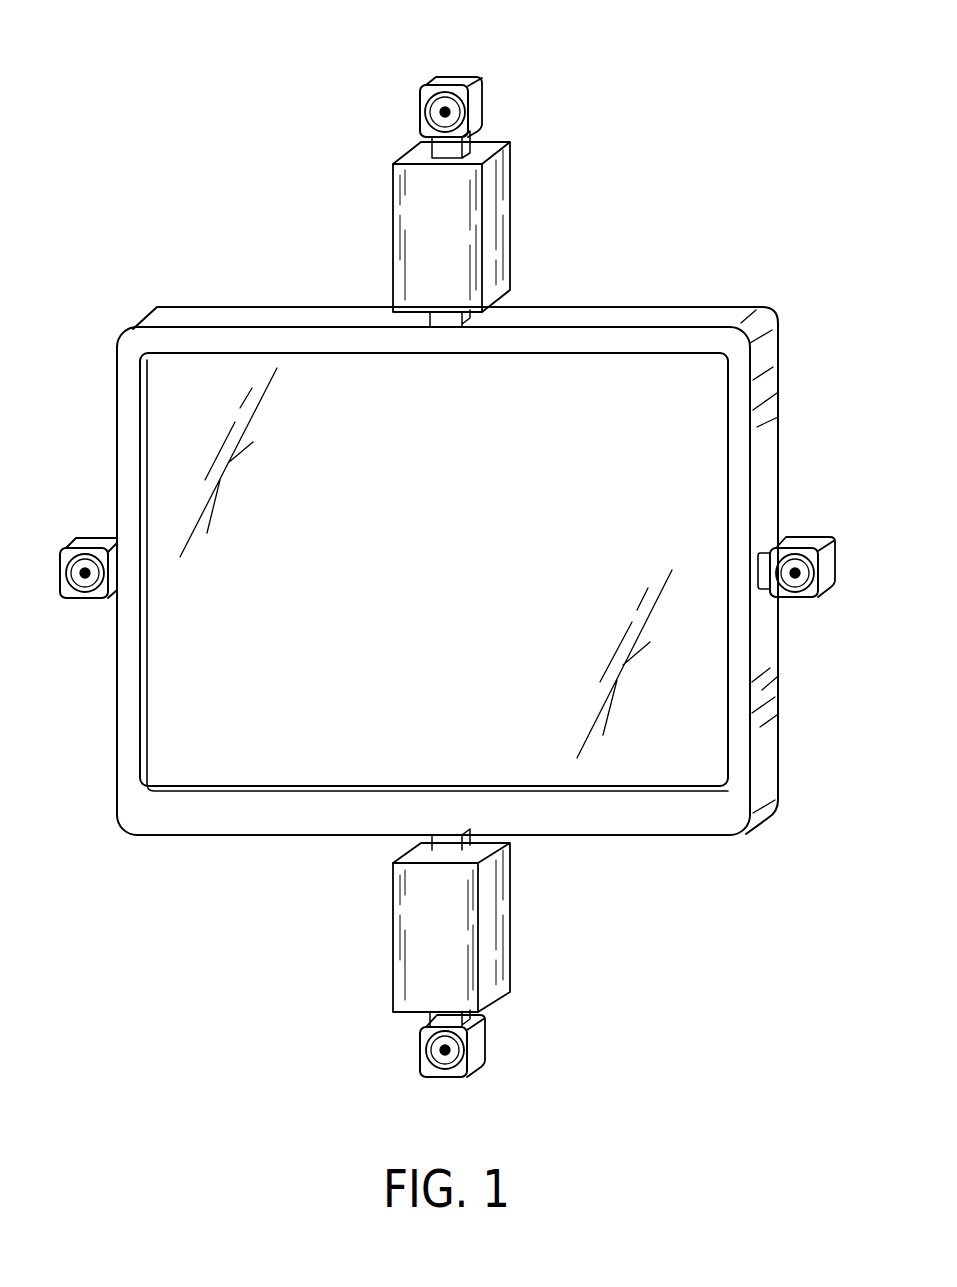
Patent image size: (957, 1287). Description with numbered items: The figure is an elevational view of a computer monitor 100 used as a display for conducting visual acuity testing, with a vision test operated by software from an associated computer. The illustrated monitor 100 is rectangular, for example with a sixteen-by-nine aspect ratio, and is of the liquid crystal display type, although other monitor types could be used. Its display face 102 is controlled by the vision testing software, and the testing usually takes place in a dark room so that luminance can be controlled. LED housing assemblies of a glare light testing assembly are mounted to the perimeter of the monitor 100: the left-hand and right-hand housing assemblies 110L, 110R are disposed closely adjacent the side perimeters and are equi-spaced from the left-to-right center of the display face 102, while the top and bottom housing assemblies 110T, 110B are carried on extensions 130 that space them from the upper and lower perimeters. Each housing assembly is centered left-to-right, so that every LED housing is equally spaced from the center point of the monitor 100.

The monitor 100 is at (725, 150).
The display face 102 is at (317, 680).
The top LED housing assembly 110T is at (420, 113).
The bottom LED housing assembly 110B is at (480, 1043).
The left-hand LED housing assembly 110L is at (92, 542).
The right-hand LED housing assembly 110R is at (803, 547).
The extension 130 is at (491, 224).